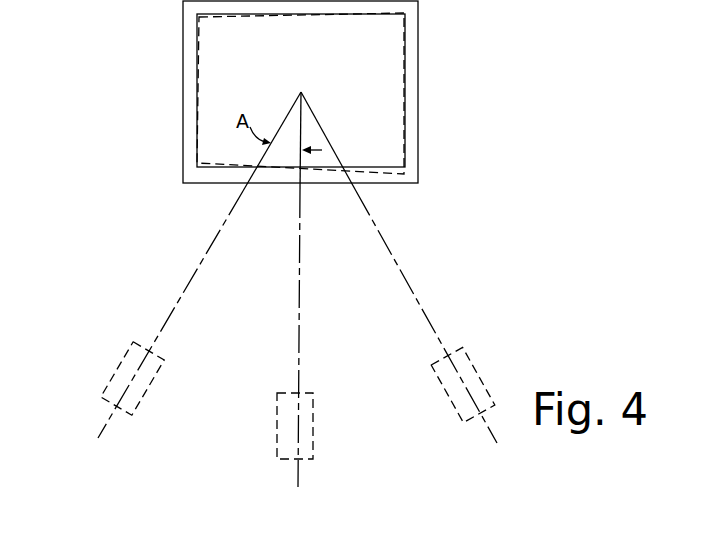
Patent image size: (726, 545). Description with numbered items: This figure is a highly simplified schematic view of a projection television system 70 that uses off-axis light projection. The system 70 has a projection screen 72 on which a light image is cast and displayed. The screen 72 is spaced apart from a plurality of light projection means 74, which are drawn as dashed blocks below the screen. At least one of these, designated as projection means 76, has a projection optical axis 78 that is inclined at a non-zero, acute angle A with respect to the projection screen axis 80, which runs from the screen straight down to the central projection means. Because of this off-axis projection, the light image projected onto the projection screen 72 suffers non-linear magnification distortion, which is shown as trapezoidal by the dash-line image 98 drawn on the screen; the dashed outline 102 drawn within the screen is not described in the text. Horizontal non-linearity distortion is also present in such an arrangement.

The projection television system 70 is at (108, 77).
The projection screen 72 is at (183, 59).
The light projection means 74 is at (155, 392).
The projection means 76 is at (112, 378).
The projection optical axis 78 is at (195, 273).
The projection screen axis 80 is at (299, 283).
The dash-line image 98 is at (403, 178).
The mask outline 102 is at (199, 2).